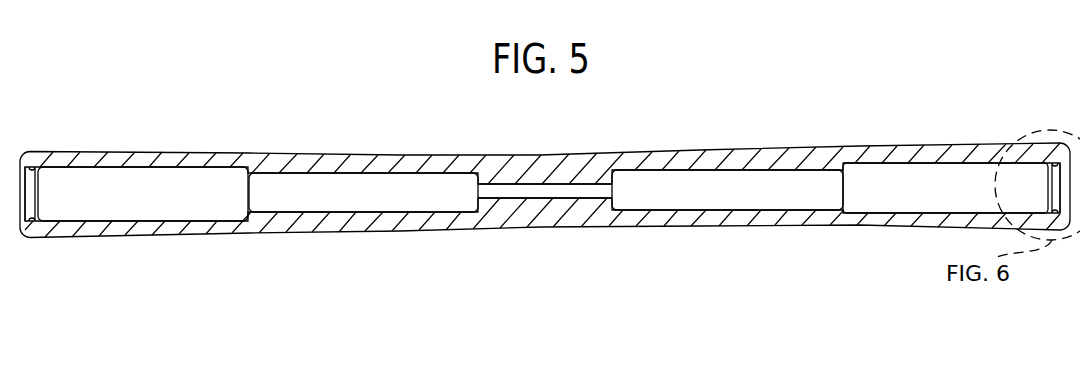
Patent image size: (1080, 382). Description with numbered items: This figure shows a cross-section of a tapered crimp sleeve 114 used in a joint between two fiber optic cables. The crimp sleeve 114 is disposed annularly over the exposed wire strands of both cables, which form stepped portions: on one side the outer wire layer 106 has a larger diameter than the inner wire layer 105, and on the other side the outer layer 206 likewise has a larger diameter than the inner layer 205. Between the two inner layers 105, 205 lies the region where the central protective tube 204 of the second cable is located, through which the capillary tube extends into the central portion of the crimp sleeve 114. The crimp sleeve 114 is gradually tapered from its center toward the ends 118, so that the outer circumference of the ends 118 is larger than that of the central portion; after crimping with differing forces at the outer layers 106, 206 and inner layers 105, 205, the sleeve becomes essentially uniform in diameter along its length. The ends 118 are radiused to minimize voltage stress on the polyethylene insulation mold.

The crimp sleeve 114 is at (525, 152).
The ends 118 is at (33, 150).
The outer wire layer 106 is at (181, 167).
The inner wire layer 105 is at (347, 173).
The central protective tube 204 is at (571, 187).
The inner layer 205 is at (727, 168).
The outer layer 206 is at (937, 163).